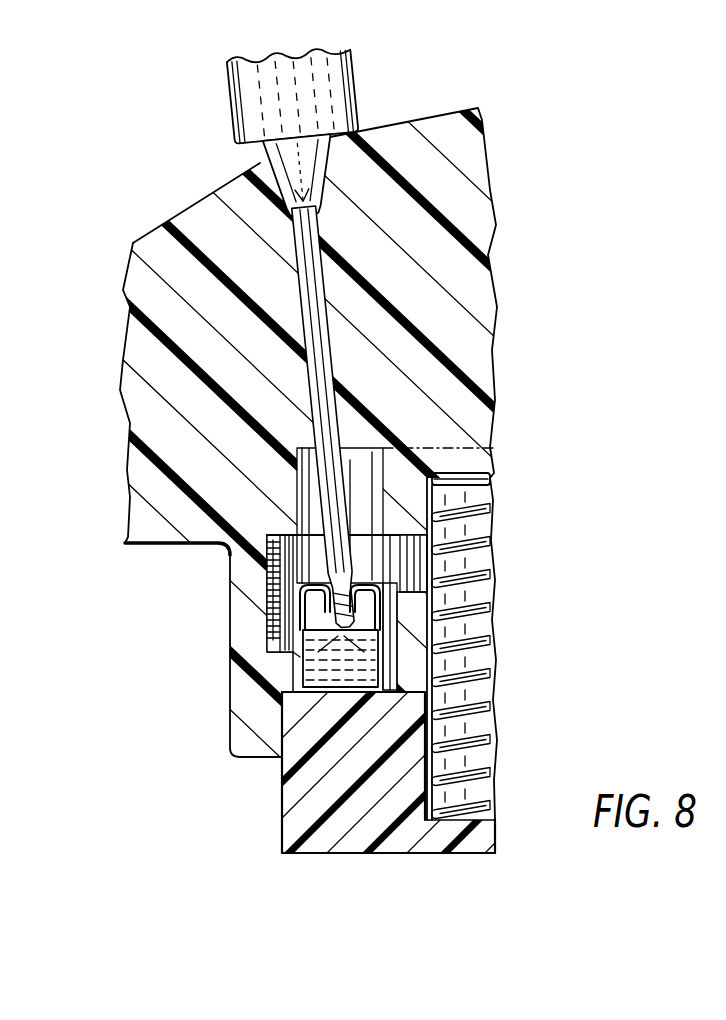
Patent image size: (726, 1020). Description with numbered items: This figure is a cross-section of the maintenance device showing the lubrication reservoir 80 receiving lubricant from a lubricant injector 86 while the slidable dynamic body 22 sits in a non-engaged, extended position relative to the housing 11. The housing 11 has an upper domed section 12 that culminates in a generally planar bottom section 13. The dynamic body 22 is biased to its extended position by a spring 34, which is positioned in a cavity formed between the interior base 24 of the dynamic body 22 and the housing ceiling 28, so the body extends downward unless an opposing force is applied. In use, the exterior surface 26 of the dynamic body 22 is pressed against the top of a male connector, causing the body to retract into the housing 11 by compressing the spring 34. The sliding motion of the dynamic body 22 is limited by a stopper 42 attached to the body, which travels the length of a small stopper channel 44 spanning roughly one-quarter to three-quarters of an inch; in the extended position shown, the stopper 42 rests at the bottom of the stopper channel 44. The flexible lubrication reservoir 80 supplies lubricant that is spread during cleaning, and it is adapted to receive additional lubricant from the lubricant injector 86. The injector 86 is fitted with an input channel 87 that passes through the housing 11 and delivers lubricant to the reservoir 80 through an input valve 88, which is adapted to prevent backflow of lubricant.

The housing 11 is at (100, 403).
The domed section 12 is at (428, 130).
The bottom section 13 is at (140, 548).
The dynamic body 22 is at (282, 806).
The interior base 24 is at (497, 817).
The exterior surface 26 is at (442, 853).
The housing ceiling 28 is at (495, 478).
The spring 34 is at (492, 507).
The stopper 42 is at (268, 637).
The stopper channel 44 is at (300, 580).
The lubrication reservoir 80 is at (303, 663).
The lubricant injector 86 is at (286, 212).
The input channel 87 is at (312, 402).
The input valve 88 is at (305, 592).